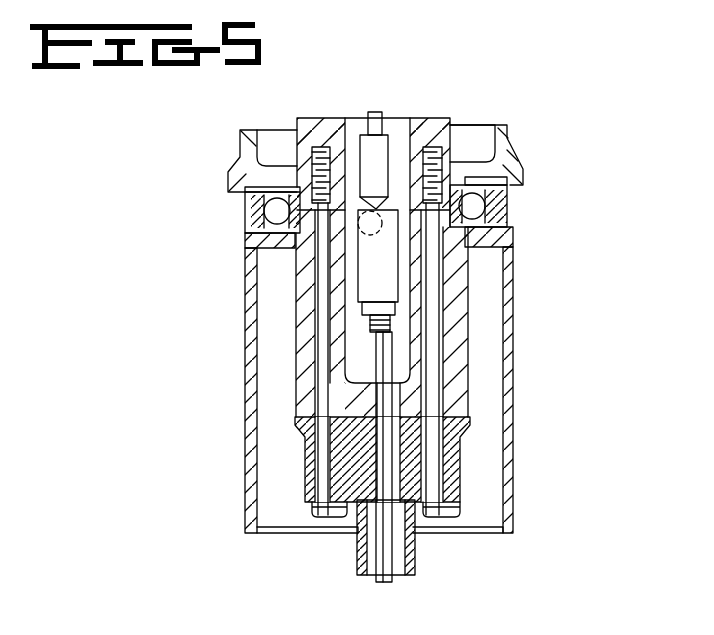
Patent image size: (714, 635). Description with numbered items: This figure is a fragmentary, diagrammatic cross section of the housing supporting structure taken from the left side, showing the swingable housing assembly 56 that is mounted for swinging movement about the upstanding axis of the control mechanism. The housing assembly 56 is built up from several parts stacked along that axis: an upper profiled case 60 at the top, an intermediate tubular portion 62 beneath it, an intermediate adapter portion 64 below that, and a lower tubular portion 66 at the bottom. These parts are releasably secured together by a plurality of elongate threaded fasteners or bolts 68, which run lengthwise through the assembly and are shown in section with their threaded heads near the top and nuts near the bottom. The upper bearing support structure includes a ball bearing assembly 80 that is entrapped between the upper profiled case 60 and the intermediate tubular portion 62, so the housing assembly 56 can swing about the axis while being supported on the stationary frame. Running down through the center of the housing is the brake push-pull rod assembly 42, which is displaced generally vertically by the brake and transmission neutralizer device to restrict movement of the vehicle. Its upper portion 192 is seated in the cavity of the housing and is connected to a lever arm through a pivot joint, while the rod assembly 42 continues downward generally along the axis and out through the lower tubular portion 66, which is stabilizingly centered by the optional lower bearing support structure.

The third push-pull control or rod assembly 42 is at (378, 560).
The swingable housing assembly 56 is at (442, 115).
The upper profiled case 60 is at (243, 165).
The intermediate tubular portion 62 is at (300, 298).
The intermediate adapter portion 64 is at (307, 460).
The lower tubular portion 66 is at (357, 550).
The elongate threaded fasteners or bolts 68 is at (438, 517).
The ball bearing assembly 80 is at (505, 207).
The upper portion of the brake push-pull rod assembly 192 is at (360, 143).